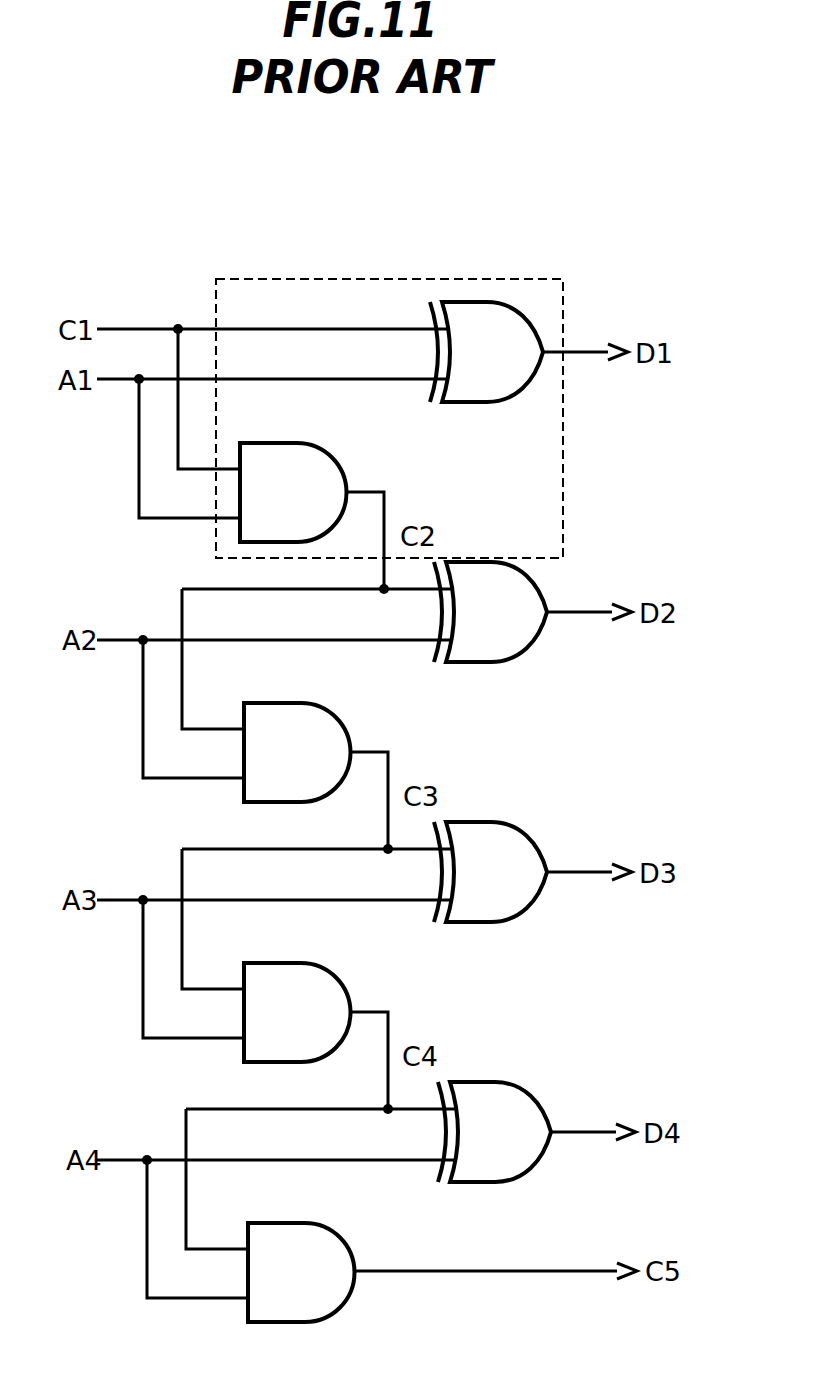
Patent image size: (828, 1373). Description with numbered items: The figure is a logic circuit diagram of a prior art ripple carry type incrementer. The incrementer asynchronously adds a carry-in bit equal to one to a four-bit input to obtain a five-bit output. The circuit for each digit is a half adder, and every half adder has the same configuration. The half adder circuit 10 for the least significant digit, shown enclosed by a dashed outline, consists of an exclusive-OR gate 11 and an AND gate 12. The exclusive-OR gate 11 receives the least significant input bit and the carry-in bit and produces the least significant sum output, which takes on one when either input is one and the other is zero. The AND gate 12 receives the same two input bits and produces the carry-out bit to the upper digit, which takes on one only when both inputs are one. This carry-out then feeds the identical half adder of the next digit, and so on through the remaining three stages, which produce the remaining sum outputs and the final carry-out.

The half adder circuit 10 is at (390, 279).
The exclusive-OR gate 11 is at (488, 402).
The AND gate 12 is at (306, 443).